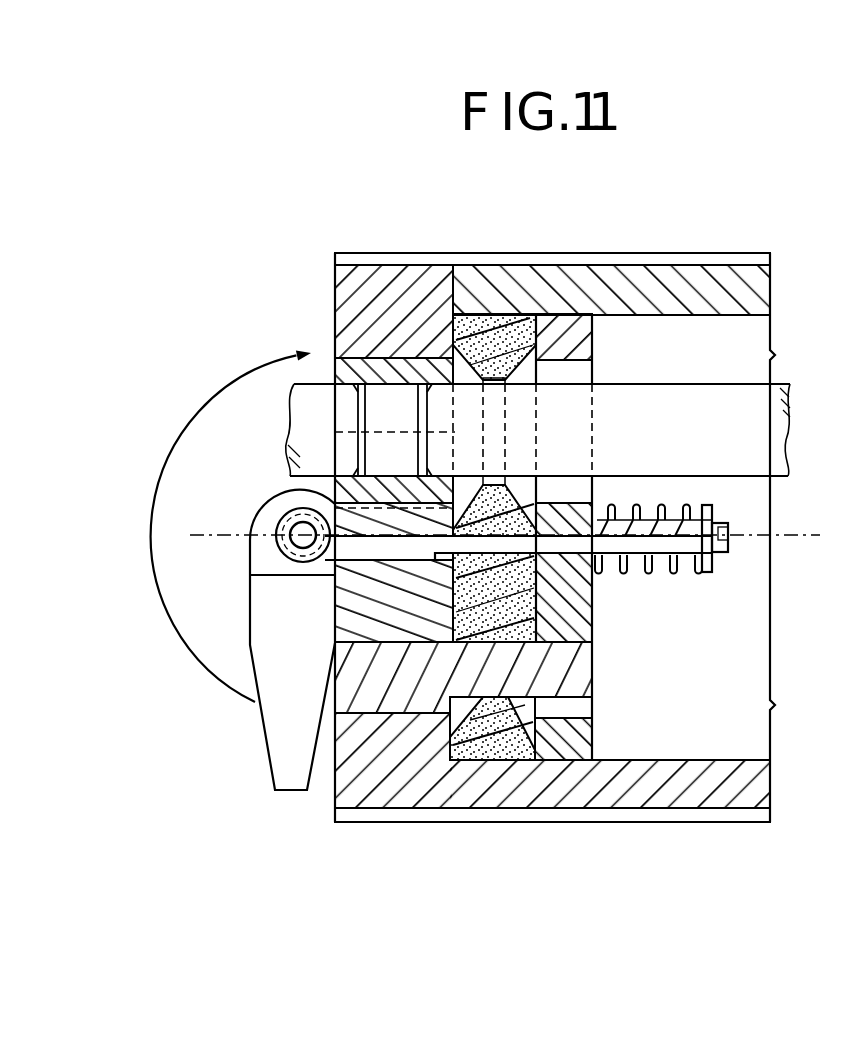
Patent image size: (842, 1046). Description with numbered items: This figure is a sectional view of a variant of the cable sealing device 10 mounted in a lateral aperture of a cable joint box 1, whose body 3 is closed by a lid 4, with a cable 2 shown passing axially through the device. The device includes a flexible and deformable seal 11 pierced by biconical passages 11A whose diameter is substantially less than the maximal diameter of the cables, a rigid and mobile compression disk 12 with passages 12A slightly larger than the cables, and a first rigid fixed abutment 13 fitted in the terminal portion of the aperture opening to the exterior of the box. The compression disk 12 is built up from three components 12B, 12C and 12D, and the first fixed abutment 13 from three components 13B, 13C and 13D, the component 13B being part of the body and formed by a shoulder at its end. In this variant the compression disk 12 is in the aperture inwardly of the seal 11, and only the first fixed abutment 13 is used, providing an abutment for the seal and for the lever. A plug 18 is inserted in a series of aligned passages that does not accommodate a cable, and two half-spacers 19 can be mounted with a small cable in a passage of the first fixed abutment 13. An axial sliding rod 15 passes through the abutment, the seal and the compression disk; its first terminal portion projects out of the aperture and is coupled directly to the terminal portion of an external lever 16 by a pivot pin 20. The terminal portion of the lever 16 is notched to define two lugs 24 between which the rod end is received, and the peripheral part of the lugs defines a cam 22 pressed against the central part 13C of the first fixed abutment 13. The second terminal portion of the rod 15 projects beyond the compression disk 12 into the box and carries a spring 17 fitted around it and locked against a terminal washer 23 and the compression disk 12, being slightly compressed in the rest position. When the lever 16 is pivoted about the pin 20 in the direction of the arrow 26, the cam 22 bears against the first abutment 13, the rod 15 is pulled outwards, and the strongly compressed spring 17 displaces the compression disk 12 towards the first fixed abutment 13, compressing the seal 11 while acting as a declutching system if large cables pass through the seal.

The cable joint box 1 is at (535, 238).
The shaft 2 is at (705, 405).
The body 3 is at (700, 795).
The lid 4 is at (692, 290).
The cable sealing device 10 is at (612, 688).
The seal 11 is at (495, 328).
The passages of the seal 11A is at (525, 705).
The compression disk 12 is at (598, 330).
The passages of the compression disk 12A is at (577, 375).
The component of the compression disk 12B is at (575, 740).
The component of the compression disk 12C is at (577, 610).
The component of the compression disk 12D is at (575, 345).
The first fixed abutment 13 is at (326, 292).
The component of the first fixed abutment 13B is at (413, 757).
The central part of the first fixed abutment 13C is at (370, 598).
The component of the first fixed abutment 13D is at (376, 283).
The sliding rod 15 is at (680, 566).
The lever 16 is at (285, 738).
The spring 17 is at (630, 574).
The plug 18 is at (360, 683).
The half-spacers 19 is at (340, 360).
The pivot pin 20 is at (297, 543).
The cam 22 is at (282, 492).
The terminal washer 23 is at (712, 520).
The lugs 24 is at (270, 515).
The arrow 26 is at (252, 370).